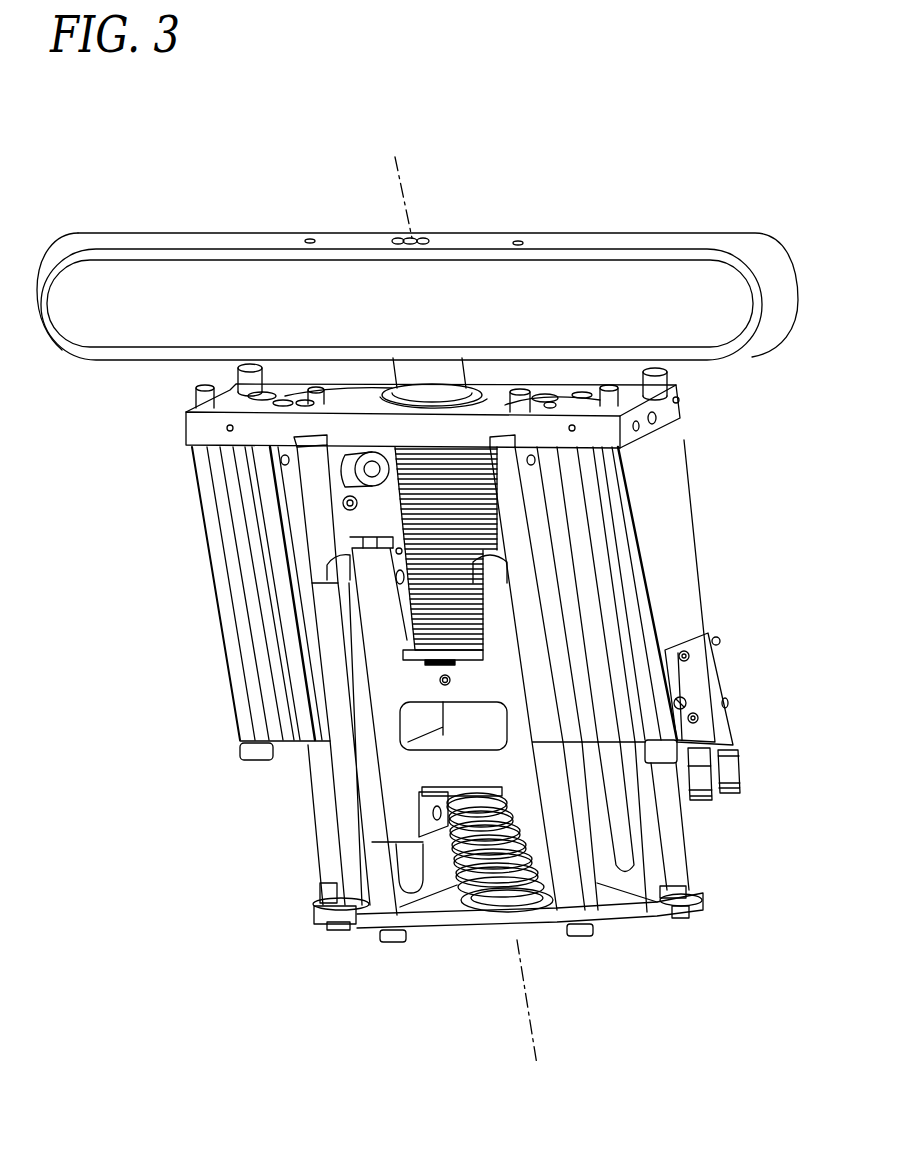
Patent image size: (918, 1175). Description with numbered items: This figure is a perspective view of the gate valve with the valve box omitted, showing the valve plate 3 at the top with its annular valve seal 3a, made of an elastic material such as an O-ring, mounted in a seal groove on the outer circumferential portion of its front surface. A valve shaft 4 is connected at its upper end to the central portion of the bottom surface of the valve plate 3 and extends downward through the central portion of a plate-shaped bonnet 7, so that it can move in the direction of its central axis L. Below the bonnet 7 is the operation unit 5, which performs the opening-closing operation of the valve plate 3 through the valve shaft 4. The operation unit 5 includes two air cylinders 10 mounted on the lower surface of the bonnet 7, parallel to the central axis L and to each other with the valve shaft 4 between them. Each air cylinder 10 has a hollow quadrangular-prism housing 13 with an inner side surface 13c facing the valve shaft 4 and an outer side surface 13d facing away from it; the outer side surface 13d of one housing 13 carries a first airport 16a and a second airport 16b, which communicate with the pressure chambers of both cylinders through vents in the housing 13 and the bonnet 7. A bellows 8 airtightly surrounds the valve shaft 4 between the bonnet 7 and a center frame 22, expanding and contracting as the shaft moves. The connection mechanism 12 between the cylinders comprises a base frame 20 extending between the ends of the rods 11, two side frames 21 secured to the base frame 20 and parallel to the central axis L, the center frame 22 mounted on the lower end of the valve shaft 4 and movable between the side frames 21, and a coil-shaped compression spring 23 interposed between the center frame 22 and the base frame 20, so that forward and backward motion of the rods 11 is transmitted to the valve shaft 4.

The valve plate 3 is at (417, 243).
The valve seal 3a is at (145, 258).
The valve shaft 4 is at (453, 372).
The operation unit 5 is at (459, 694).
The bonnet 7 is at (660, 403).
The bellows 8 is at (408, 605).
The air cylinder 10 is at (454, 597).
The rod 11 is at (332, 867).
The connection mechanism 12 is at (447, 947).
The housing 13 is at (197, 484).
The inner side surface 13c is at (318, 518).
The outer side surface 13d is at (683, 575).
The first airport 16a is at (705, 782).
The second airport 16b is at (727, 768).
The base frame 20 is at (494, 736).
The side frame 21 is at (370, 810).
The center frame 22 is at (400, 762).
The compression spring 23 is at (496, 857).
The central axis L is at (462, 593).